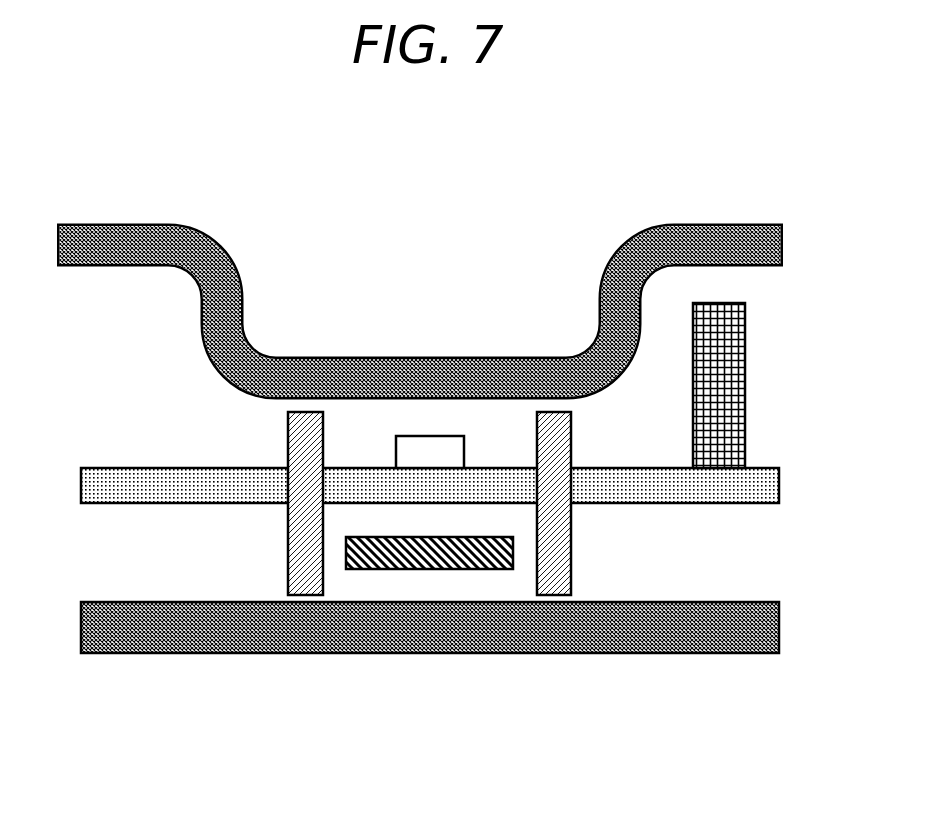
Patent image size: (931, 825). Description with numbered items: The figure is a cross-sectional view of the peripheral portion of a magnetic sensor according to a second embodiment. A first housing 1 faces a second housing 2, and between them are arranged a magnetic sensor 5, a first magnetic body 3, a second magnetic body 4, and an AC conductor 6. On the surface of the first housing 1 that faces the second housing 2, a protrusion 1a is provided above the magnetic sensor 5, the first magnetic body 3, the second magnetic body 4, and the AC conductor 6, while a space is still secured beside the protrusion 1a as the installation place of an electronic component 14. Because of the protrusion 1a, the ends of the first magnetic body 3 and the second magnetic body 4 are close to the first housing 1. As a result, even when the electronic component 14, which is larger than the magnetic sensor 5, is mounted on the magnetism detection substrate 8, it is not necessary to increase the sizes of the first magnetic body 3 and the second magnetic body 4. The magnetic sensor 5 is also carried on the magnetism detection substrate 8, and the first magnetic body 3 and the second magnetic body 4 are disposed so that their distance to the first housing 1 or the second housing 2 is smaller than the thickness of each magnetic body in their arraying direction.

The first housing 1 is at (722, 224).
The protrusion 1a is at (195, 382).
The second housing 2 is at (167, 641).
The first magnetic body 3 is at (300, 553).
The second magnetic body 4 is at (565, 553).
The magnetic sensor 5 is at (432, 450).
The AC conductor 6 is at (432, 560).
The magnetism detection substrate 8 is at (167, 486).
The electronic component 14 is at (722, 406).